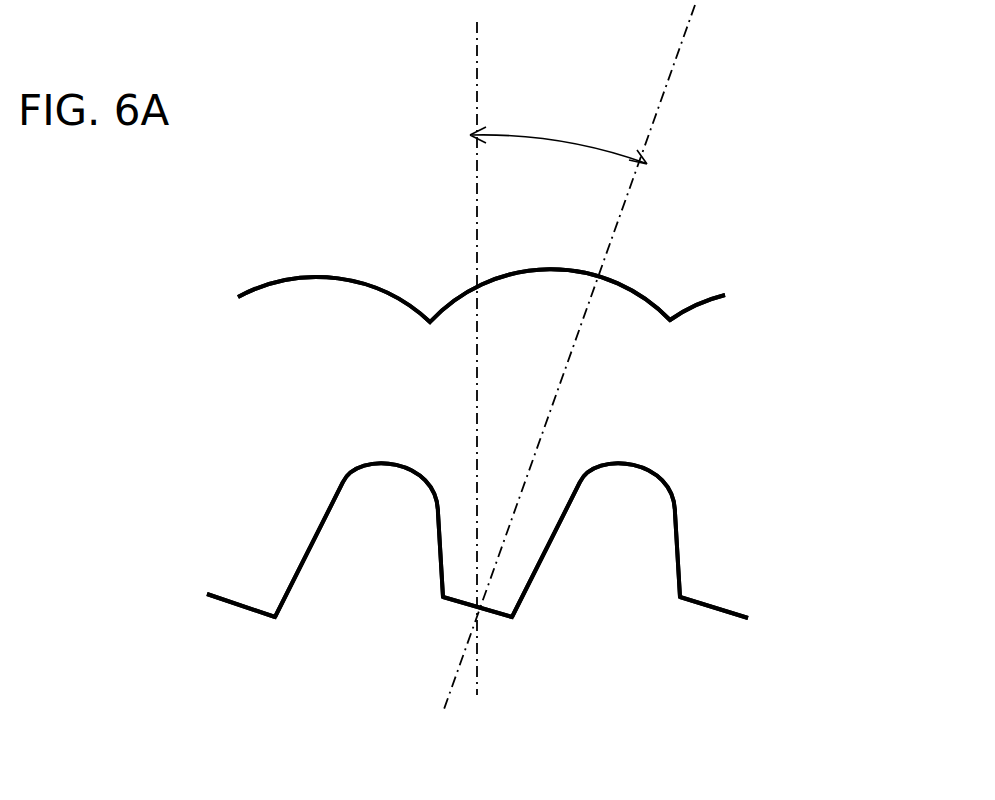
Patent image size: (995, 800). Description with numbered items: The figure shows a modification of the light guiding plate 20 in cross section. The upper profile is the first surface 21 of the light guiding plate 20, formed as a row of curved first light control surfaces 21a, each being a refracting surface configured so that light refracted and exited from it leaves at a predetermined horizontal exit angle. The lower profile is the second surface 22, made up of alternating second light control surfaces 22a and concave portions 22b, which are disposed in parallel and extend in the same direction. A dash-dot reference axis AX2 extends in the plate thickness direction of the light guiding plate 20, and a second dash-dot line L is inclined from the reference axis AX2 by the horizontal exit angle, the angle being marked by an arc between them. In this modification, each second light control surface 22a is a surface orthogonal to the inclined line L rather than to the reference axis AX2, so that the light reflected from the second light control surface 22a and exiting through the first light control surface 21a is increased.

The light guiding plate 20 is at (411, 143).
The first surface of the light guiding plate 21 is at (345, 186).
The first light control surface 21a is at (304, 273).
The second surface of the light guiding plate 22 is at (347, 707).
The second light control surface 22a is at (243, 607).
The concave portion 22b is at (375, 575).
The reference axis AX2 is at (481, 51).
The line L is at (661, 100).